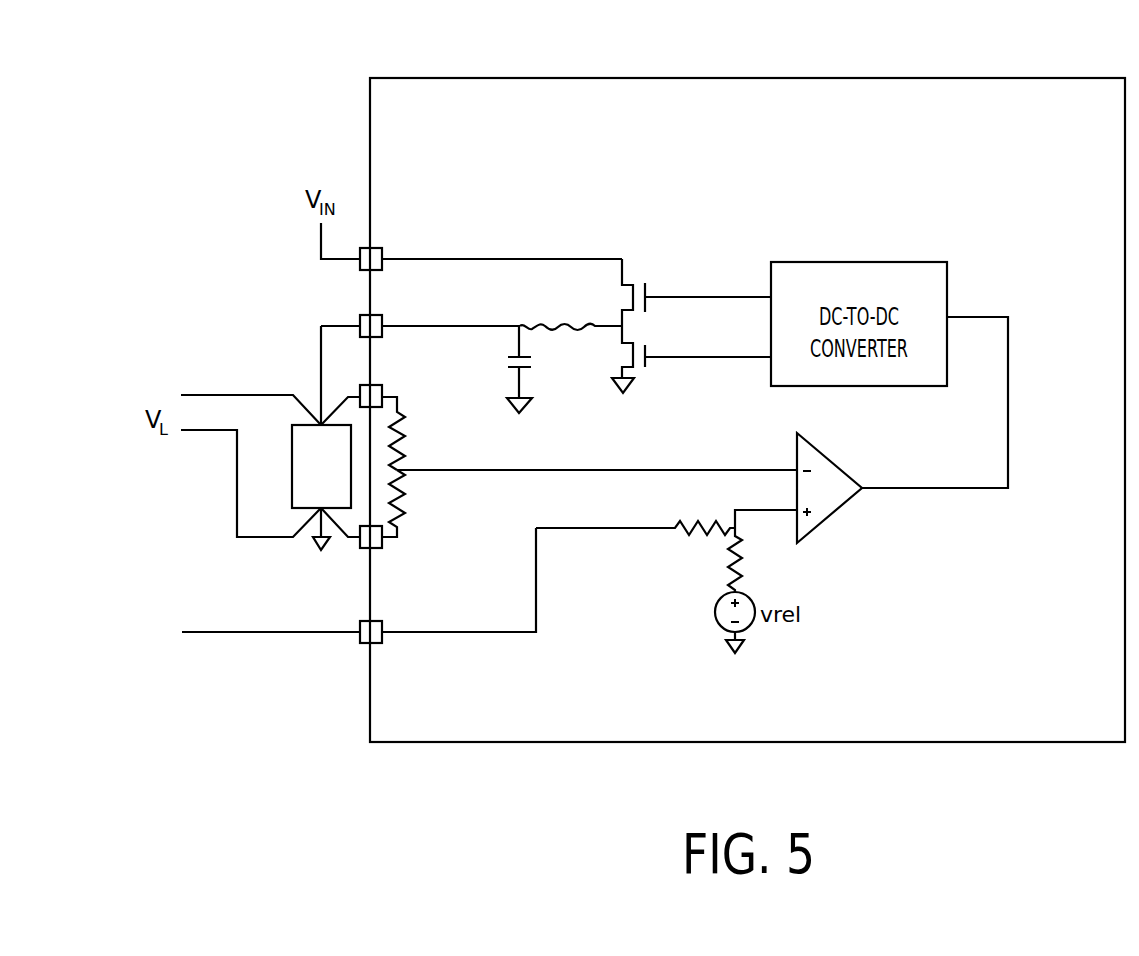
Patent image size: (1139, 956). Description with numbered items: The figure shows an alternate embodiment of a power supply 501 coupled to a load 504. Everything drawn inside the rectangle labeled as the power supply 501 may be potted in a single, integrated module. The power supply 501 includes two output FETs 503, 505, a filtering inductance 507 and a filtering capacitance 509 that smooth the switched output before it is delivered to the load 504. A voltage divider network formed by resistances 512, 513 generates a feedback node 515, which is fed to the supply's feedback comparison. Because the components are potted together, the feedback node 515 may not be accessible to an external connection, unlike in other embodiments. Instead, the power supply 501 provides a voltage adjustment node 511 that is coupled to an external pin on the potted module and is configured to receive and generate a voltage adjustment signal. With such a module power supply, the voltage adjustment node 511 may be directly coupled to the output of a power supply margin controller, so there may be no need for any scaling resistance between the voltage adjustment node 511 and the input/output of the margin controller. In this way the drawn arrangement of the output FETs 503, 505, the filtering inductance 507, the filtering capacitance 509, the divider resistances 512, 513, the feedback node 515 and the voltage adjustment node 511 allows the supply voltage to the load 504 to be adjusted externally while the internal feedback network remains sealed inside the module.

The power supply 501 is at (728, 78).
The output FET 503 is at (625, 268).
The load 504 is at (292, 482).
The output FET 505 is at (640, 368).
The filtering inductance 507 is at (540, 327).
The filtering capacitance 509 is at (532, 365).
The voltage adjustment node 511 is at (365, 645).
The resistance 512 is at (400, 430).
The resistance 513 is at (400, 497).
The feedback node 515 is at (400, 470).